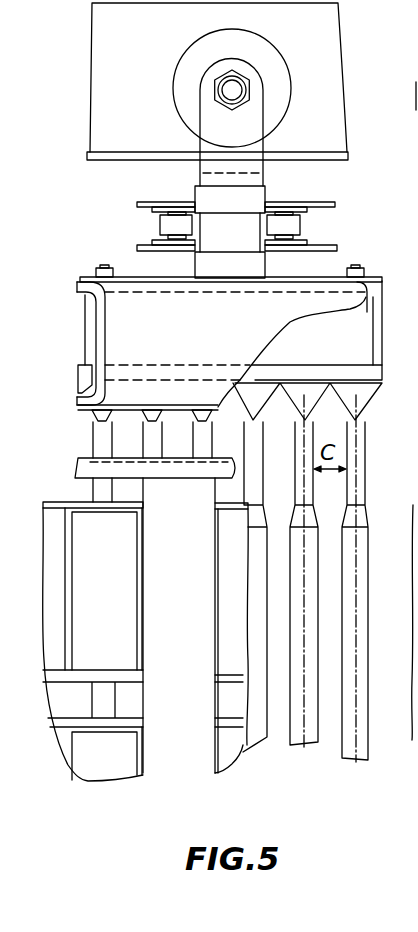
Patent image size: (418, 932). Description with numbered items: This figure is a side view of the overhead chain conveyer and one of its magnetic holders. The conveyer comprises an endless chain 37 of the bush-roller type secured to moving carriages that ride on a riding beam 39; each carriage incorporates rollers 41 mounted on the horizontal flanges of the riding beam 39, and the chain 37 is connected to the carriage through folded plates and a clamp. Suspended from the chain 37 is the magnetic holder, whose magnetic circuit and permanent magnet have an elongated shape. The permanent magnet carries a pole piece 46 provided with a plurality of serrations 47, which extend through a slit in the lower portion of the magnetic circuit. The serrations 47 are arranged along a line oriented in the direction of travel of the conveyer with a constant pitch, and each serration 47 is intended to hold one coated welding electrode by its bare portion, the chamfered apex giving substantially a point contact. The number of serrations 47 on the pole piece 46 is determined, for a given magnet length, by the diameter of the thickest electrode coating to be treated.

The endless chain 37 is at (165, 226).
The riding beam 39 is at (105, 92).
The roller 41 is at (272, 80).
The pole piece 46 is at (88, 375).
The serrations 47 is at (365, 398).